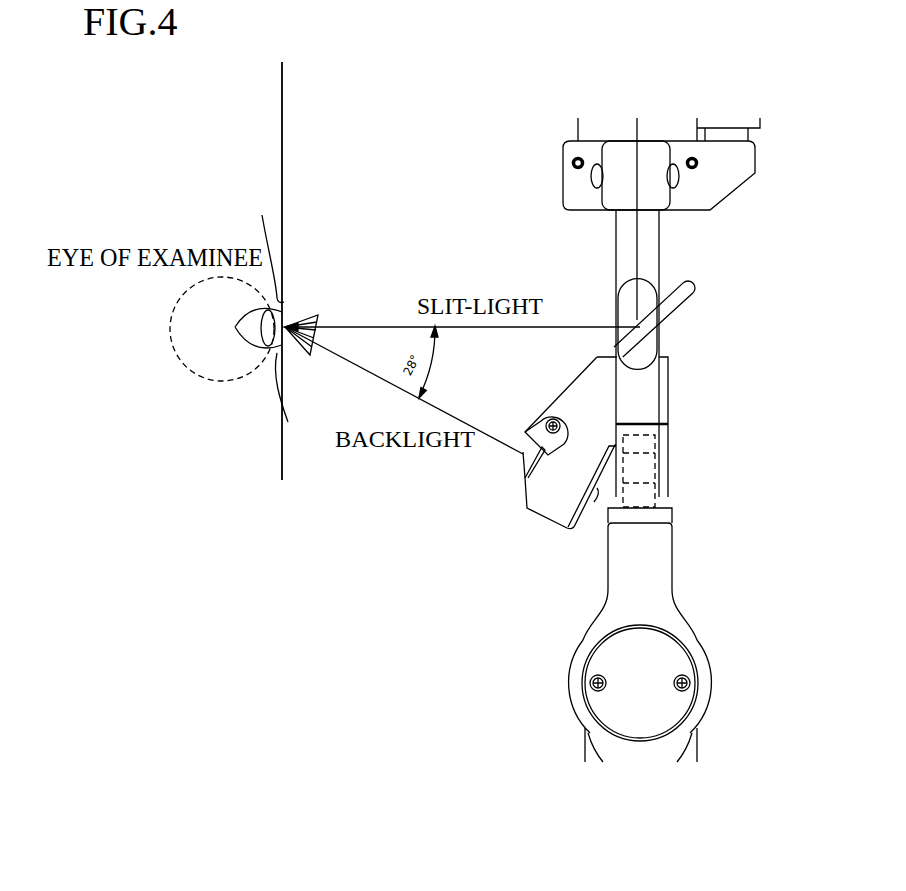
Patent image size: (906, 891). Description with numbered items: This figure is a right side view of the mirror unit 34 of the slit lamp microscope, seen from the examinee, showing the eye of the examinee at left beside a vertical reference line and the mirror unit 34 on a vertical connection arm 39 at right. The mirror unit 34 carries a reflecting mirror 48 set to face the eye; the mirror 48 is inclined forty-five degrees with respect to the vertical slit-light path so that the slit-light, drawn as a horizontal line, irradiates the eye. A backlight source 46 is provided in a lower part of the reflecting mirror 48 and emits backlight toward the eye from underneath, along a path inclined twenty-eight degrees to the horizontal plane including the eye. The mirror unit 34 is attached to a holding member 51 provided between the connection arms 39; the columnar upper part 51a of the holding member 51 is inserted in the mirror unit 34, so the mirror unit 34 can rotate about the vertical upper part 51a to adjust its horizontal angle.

The mirror unit 34 is at (575, 388).
The connection arms 39 is at (658, 233).
The backlight source 46 is at (523, 472).
The reflecting mirror 48 is at (673, 293).
The holding member 51 is at (663, 508).
The upper part of the holding member 51a is at (643, 463).